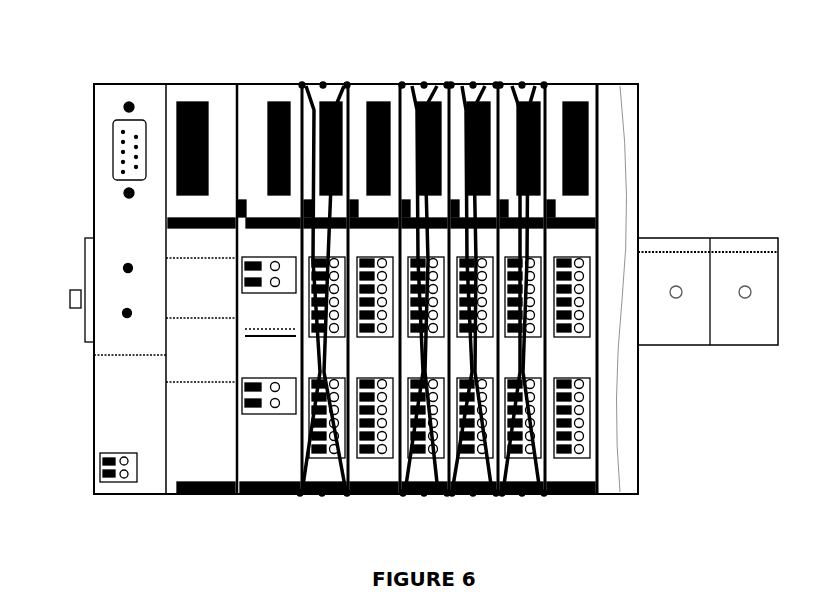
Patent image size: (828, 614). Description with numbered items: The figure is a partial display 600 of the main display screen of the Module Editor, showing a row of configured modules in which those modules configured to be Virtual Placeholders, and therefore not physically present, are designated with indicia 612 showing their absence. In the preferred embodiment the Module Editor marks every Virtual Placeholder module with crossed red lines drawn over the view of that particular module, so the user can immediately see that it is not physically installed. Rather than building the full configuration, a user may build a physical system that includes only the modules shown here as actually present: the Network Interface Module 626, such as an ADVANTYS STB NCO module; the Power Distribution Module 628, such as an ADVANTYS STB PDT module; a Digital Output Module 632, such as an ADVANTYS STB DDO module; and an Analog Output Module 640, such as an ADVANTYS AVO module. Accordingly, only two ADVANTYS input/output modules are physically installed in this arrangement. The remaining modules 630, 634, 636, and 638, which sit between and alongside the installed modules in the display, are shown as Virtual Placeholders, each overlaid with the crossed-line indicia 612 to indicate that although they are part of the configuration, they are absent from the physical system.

The partial display 600 is at (686, 90).
The indicia 612 is at (525, 237).
The Network Interface Module 626 is at (202, 207).
The Power Distribution Module 628 is at (268, 103).
The Virtual Placeholder module 630 is at (323, 102).
The Digital Output Module 632 is at (373, 97).
The Virtual Placeholder module 634 is at (423, 473).
The Virtual Placeholder module 636 is at (475, 470).
The Virtual Placeholder module 638 is at (637, 306).
The Analog Output Module 640 is at (578, 469).